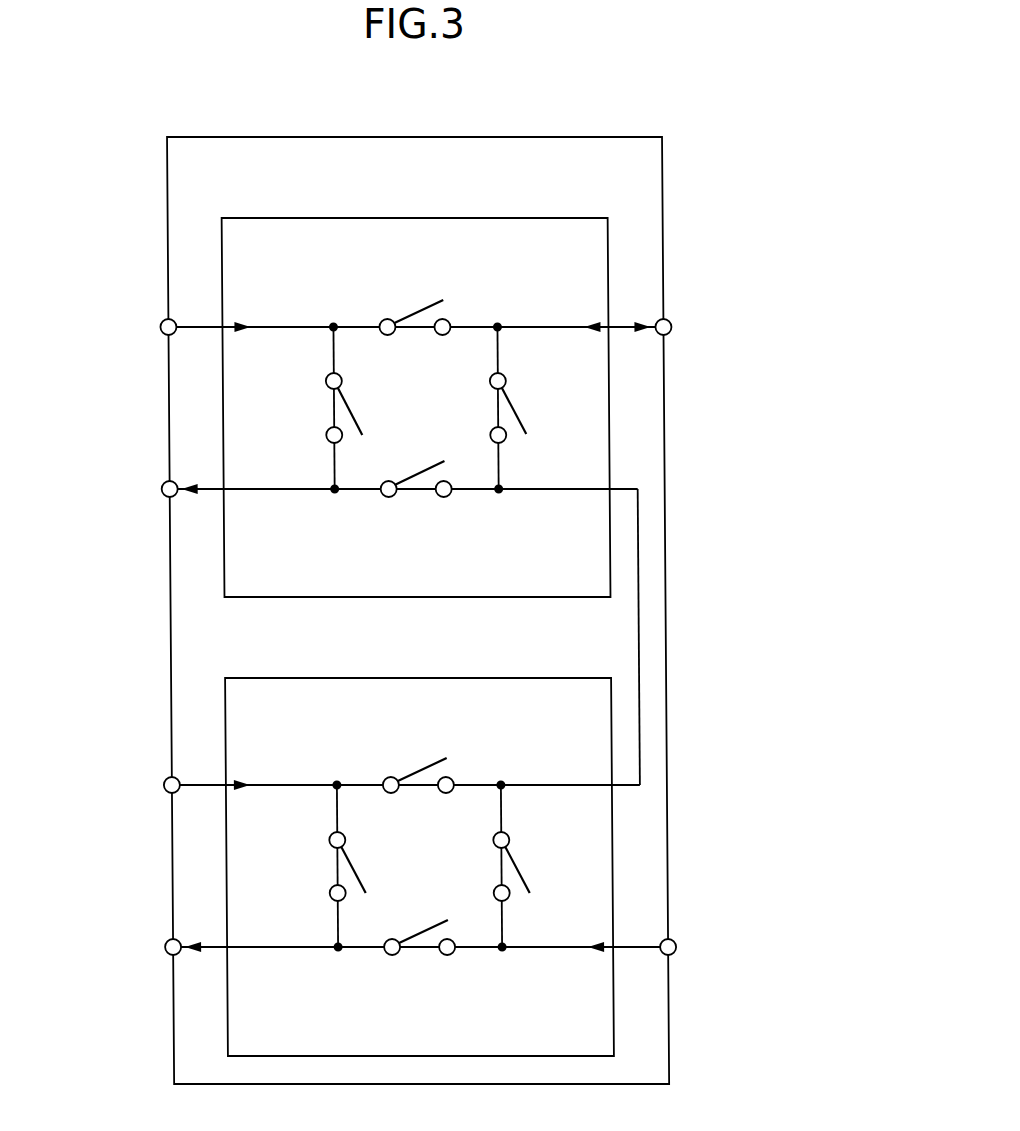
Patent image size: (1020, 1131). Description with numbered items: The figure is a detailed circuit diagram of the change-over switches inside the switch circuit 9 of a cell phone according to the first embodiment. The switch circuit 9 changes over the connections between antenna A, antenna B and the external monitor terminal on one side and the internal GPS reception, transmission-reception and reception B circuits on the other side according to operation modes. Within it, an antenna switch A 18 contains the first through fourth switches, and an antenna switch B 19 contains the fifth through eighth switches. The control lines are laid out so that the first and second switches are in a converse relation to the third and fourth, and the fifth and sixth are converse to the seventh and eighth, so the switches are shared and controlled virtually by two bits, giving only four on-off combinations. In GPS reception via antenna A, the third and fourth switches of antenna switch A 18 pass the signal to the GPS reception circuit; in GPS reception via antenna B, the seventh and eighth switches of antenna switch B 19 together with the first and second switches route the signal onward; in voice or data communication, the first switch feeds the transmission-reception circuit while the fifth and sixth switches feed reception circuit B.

The switch circuit 9 is at (494, 137).
The antenna switch A 18 is at (250, 218).
The antenna switch B 19 is at (253, 678).